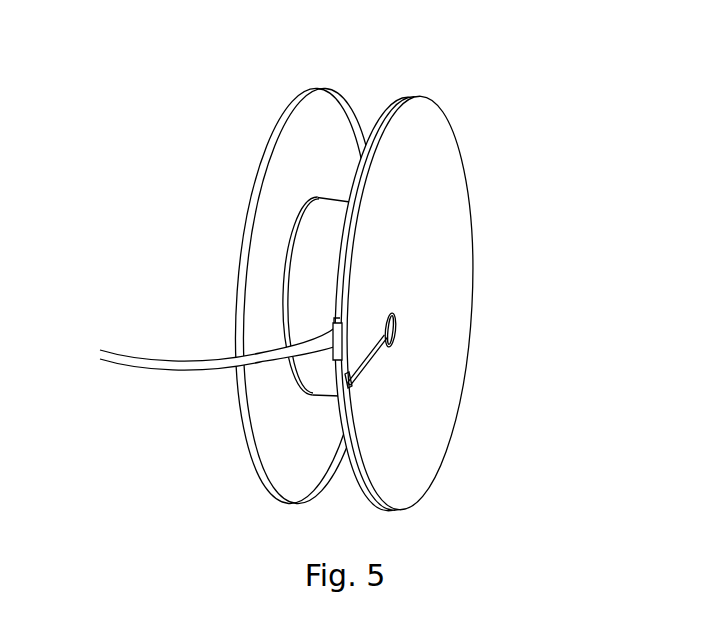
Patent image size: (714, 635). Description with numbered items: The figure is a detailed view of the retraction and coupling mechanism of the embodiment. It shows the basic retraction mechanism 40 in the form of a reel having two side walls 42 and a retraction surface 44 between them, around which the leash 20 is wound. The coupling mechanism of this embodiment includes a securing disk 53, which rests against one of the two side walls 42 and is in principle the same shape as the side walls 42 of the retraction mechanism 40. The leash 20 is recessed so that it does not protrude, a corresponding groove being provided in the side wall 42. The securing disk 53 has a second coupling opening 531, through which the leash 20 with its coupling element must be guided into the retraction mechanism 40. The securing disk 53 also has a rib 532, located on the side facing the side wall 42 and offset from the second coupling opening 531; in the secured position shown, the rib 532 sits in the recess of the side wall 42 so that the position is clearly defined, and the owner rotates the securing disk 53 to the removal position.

The retraction mechanism 40 is at (226, 131).
The side wall 42 is at (325, 103).
The retraction surface 44 is at (300, 258).
The securing disk 53 is at (452, 153).
The second coupling opening 531 is at (370, 357).
The rib 532 is at (340, 355).
The leash 20 is at (182, 367).